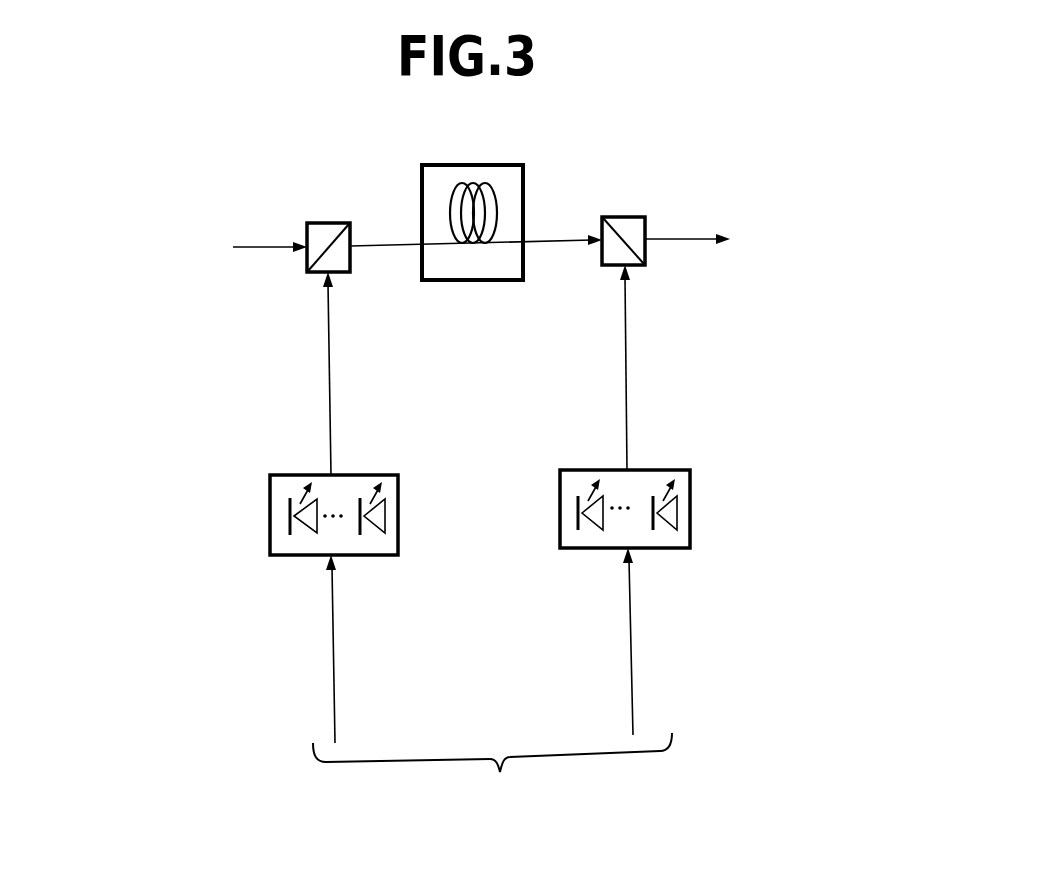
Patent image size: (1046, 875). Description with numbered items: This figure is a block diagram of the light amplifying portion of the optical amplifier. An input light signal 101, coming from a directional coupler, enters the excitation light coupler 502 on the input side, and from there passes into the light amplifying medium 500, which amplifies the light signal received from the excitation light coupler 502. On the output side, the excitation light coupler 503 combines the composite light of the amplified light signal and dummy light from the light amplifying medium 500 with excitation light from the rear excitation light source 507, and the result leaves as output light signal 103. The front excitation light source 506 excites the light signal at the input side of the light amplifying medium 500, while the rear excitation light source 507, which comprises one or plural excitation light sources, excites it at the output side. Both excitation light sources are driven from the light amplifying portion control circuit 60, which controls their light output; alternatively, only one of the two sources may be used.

The light signal 101 is at (175, 253).
The light signal 103 is at (784, 240).
The light amplifying medium 500 is at (468, 165).
The excitation light coupler 502 is at (324, 222).
The excitation light coupler 503 is at (633, 216).
The front excitation light source 506 is at (278, 474).
The rear excitation light source 507 is at (670, 469).
The light amplifying portion control circuit 60 is at (493, 782).